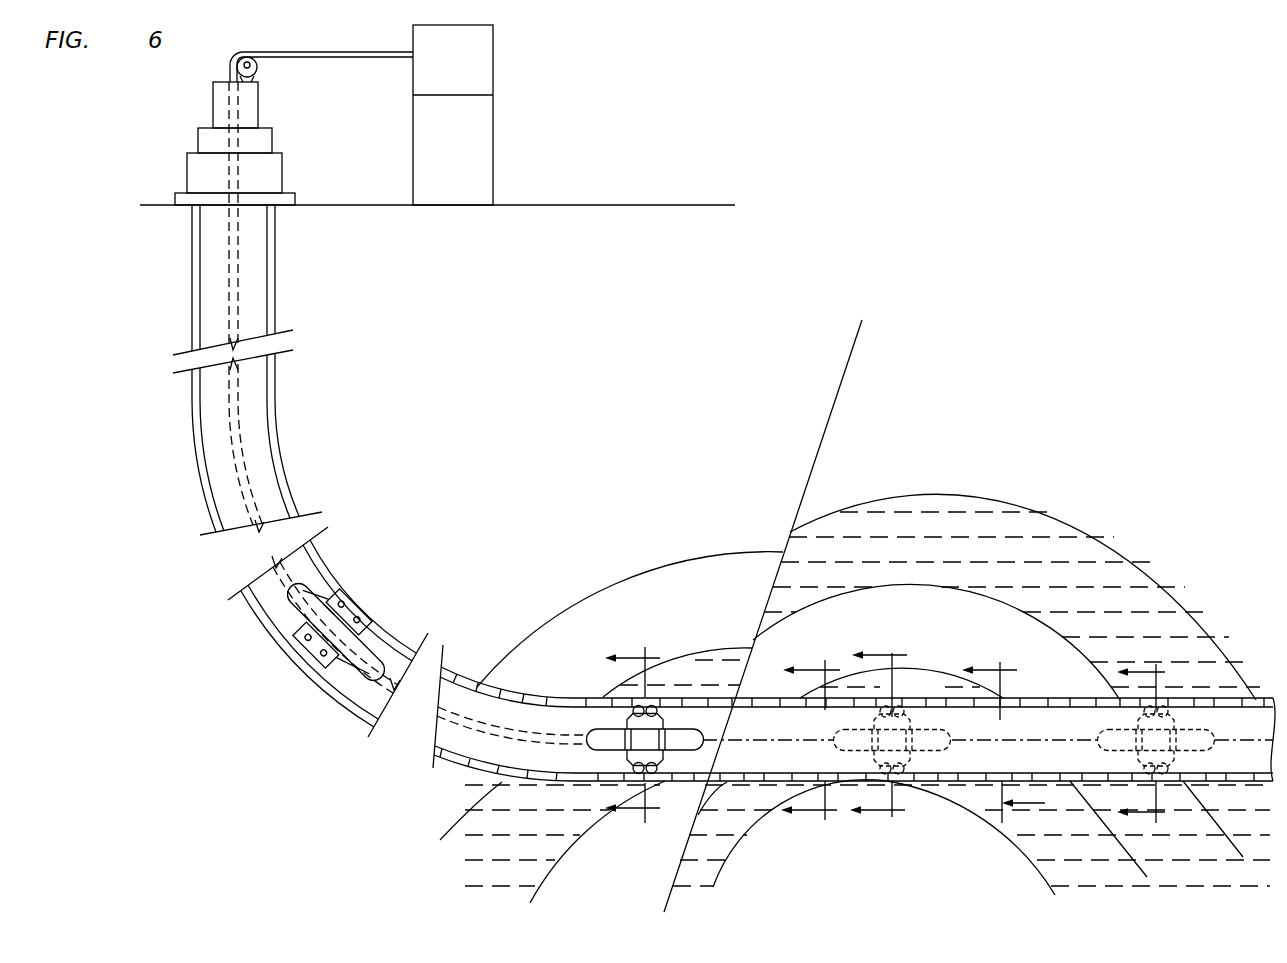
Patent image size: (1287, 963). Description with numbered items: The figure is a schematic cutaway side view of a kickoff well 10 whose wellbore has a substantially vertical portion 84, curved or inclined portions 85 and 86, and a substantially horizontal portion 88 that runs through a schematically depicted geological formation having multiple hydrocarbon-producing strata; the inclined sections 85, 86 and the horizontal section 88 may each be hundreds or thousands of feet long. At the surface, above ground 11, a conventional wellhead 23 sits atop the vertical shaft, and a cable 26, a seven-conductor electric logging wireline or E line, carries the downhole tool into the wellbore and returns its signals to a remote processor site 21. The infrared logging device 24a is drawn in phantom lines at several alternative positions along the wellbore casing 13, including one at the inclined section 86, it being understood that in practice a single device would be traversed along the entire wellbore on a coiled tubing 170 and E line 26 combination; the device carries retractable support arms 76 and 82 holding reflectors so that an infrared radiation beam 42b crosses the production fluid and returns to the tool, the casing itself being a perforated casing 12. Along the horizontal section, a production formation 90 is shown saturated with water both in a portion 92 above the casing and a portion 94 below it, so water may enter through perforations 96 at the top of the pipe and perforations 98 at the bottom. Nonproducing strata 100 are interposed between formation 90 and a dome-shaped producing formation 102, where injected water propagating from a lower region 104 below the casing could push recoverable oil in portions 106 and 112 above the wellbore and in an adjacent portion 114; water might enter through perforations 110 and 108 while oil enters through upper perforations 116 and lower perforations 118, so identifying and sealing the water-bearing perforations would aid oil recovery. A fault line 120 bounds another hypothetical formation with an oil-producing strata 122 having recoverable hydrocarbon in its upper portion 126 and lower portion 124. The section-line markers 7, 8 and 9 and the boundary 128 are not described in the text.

The well 10 is at (157, 275).
The ground 11 is at (334, 204).
The perforated casing 12 is at (367, 558).
The wellbore casing 13 is at (269, 382).
The processor site 21 is at (468, 75).
The wellhead 23 is at (272, 140).
The logging device 24a is at (298, 607).
The cable 26 is at (235, 380).
The infrared radiation beam 42b is at (662, 719).
The support arms 76 is at (557, 778).
The support arms 82 is at (664, 753).
The vertical portion 84 is at (276, 253).
The curved or inclined portion 85 is at (281, 443).
The inclined section 86 is at (390, 623).
The horizontal portion 88 is at (478, 683).
The production formation 90 is at (1087, 602).
The portion of formation above the casing 92 is at (1207, 680).
The portion of formation below the casing 94 is at (1235, 820).
The perforations at the top of the pipe 96 is at (1203, 710).
The perforations at the bottom of the pipe 98 is at (1203, 774).
The nonproducing strata 100 is at (958, 625).
The producing formation 102 is at (931, 697).
The lower region 104 is at (1052, 866).
The portion of formation above the wellbore 106 is at (990, 692).
The perforations 108 is at (1027, 710).
The perforations 110 is at (1027, 774).
The portion of formation above the wellbore 112 is at (858, 683).
The adjacent portion of formation 114 is at (756, 828).
The upper perforations 116 is at (815, 705).
The lower perforations 118 is at (818, 771).
The fault line 120 is at (823, 437).
The oil producing strata 122 is at (732, 662).
The lower portion 124 is at (528, 853).
The upper portion 126 is at (730, 698).
The formation boundary 128 is at (602, 788).
The coiled tubing 170 is at (233, 460).
The section line 7 is at (1145, 743).
The section line 8 is at (1003, 738).
The section line 9 is at (879, 735).